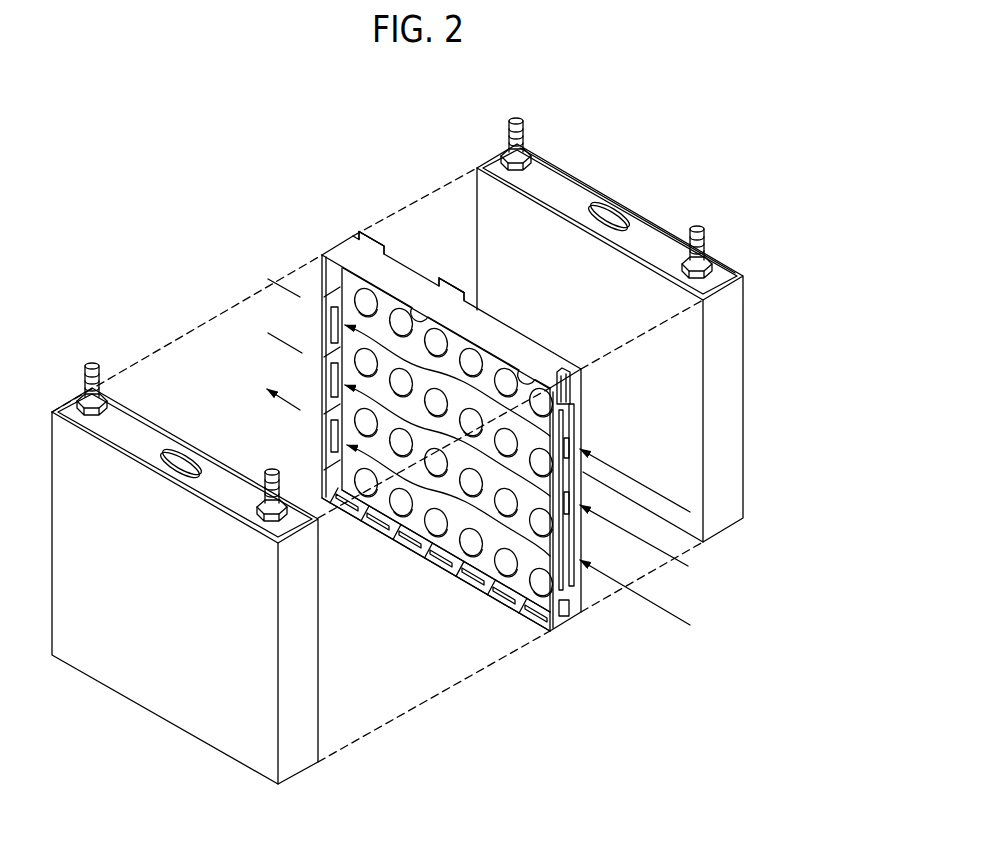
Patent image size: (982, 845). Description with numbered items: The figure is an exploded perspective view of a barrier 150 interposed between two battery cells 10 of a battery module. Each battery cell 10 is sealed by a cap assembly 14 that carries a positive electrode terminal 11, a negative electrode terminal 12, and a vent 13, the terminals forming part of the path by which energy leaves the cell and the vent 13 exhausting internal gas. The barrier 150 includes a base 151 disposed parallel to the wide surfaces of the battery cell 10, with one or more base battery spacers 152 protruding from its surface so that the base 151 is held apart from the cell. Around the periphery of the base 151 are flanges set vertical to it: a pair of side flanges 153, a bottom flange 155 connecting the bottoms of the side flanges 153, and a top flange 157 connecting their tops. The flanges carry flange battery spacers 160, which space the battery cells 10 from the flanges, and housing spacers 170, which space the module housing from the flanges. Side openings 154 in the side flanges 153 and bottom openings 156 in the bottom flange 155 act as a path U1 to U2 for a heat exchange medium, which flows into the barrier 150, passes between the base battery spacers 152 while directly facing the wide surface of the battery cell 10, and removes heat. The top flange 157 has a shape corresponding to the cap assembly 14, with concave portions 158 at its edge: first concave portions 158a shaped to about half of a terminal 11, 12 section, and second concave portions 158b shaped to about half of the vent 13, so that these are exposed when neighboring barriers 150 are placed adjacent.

The battery cell 10 is at (730, 502).
The positive electrode terminal 11 is at (517, 135).
The negative electrode terminal 12 is at (697, 236).
The vent 13 is at (607, 220).
The cap assembly 14 is at (568, 195).
The barrier 150 is at (590, 624).
The base 151 is at (562, 548).
The base battery spacer 152 is at (578, 417).
The side flange 153 is at (318, 278).
The side opening 154 is at (566, 382).
The bottom flange 155 is at (437, 568).
The bottom opening 156 is at (478, 574).
The top flange 157 is at (378, 277).
The concave portion 158 is at (466, 128).
The first concave portion 158a is at (372, 252).
The second concave portion 158b is at (465, 302).
The flange battery spacer 160 is at (410, 550).
The housing spacer 170 is at (578, 542).
The path of heat exchange medium U1 is at (690, 567).
The path of heat exchange medium U2 is at (267, 344).